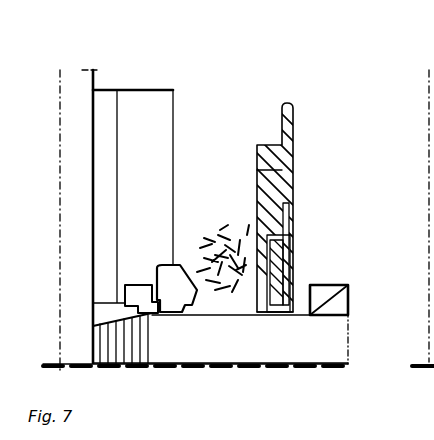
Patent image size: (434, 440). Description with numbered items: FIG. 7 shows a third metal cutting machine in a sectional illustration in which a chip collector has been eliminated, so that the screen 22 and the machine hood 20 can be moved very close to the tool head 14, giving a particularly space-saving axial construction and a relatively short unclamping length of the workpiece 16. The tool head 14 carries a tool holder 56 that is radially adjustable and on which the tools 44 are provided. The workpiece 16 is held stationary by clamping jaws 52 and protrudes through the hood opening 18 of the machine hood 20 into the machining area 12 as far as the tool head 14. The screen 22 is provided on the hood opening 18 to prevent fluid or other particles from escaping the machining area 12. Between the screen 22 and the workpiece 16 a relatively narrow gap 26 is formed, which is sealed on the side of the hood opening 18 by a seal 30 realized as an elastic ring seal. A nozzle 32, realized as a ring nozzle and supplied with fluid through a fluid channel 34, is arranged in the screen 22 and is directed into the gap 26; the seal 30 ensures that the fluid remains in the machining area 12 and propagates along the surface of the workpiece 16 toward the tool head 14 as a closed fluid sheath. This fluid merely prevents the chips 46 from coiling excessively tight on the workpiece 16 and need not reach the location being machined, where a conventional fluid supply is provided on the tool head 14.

The machining area 12 is at (222, 161).
The tool head 14 is at (82, 100).
The workpiece 16 is at (192, 343).
The hood opening 18 is at (332, 263).
The machine hood 20 is at (289, 127).
The screen 22 is at (297, 232).
The gap 26 is at (276, 315).
The seal 30 is at (297, 315).
The nozzle 32 is at (268, 315).
The fluid channel 34 is at (272, 246).
The tools 44 is at (128, 283).
The chips 46 is at (231, 262).
The clamping jaws 52 is at (345, 290).
The tool holder 56 is at (131, 105).